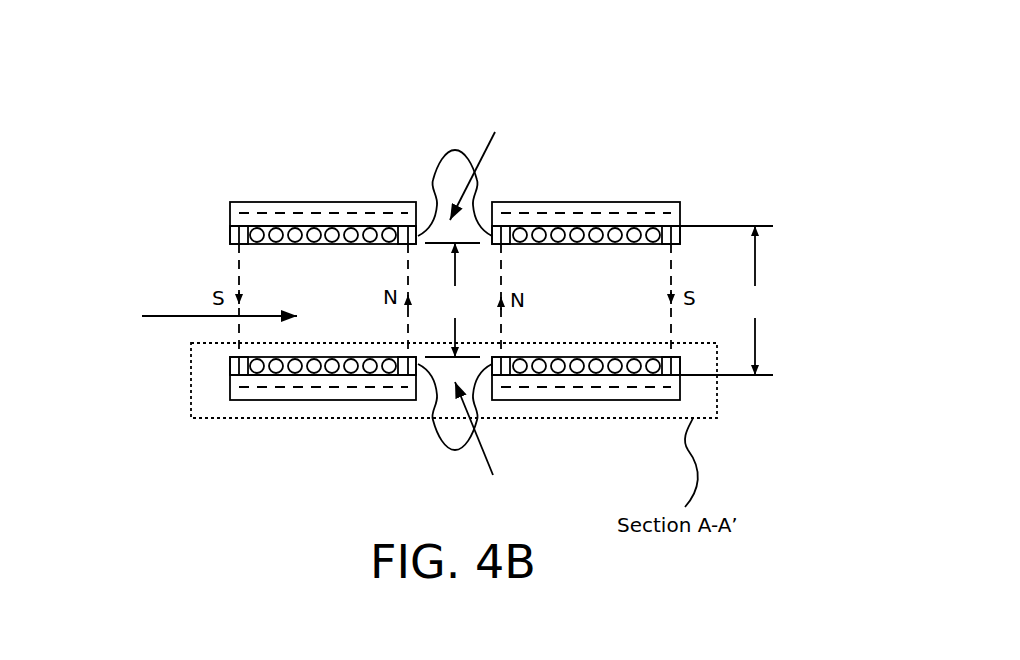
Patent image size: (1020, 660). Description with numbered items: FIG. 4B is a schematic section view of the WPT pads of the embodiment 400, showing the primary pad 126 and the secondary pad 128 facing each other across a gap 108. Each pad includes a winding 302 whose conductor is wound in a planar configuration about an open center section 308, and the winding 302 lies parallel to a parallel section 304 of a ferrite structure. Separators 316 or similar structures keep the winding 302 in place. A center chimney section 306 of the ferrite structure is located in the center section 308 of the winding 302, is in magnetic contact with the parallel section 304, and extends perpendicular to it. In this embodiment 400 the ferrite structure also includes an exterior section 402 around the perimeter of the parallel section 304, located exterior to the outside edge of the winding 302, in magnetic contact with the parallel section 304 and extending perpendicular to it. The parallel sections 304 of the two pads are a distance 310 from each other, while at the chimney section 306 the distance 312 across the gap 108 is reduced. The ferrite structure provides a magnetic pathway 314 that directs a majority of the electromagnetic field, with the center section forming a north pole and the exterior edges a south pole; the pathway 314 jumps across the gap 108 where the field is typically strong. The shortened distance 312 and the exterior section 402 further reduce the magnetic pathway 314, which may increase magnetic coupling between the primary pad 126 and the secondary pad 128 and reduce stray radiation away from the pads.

The embodiment 400 is at (143, 132).
The secondary pad 128 is at (220, 178).
The primary pad 126 is at (228, 420).
The gap 108 is at (197, 315).
The exterior section 402 is at (230, 233).
The winding 302 is at (291, 235).
The parallel section 304 is at (343, 203).
The center chimney section 306 is at (455, 299).
The center section 308 is at (482, 303).
The distance 310 is at (727, 300).
The distance 312 is at (452, 300).
The magnetic pathway 314 is at (408, 272).
The separators 316 is at (650, 244).